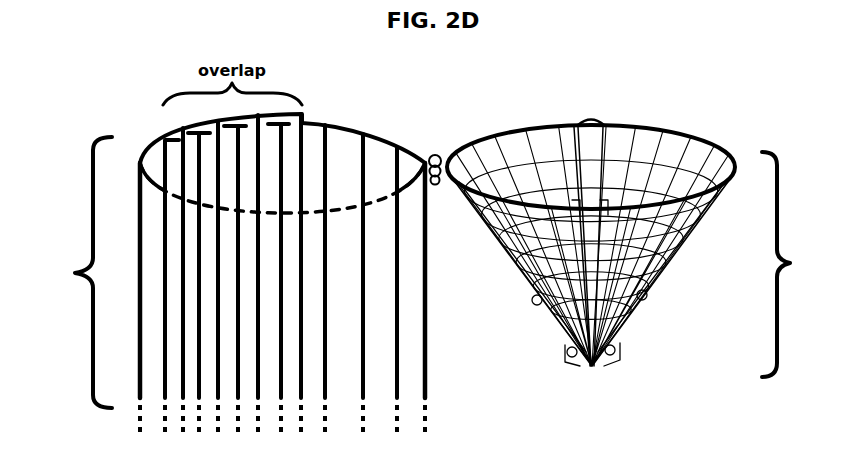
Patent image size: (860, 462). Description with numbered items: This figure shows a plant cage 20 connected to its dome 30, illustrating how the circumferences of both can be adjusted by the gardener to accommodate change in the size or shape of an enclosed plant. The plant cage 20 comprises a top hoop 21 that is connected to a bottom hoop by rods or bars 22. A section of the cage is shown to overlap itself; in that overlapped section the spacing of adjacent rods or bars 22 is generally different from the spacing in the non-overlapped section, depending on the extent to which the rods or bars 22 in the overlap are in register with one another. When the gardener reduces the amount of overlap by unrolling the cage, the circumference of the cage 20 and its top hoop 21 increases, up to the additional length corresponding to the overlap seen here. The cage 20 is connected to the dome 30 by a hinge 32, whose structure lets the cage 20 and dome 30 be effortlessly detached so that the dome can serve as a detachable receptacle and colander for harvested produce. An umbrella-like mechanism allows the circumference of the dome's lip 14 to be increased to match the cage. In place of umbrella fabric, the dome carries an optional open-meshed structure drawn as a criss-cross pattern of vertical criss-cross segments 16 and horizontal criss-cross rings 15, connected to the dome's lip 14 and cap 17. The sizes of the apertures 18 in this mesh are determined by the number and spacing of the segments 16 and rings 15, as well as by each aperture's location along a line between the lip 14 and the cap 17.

The dome's lip 14 is at (523, 130).
The horizontal criss-cross rings 15 is at (668, 165).
The vertical criss-cross segments 16 is at (708, 158).
The cap 17 is at (592, 372).
The apertures 18 is at (592, 245).
The plant cage 20 is at (72, 273).
The top hoop 21 is at (378, 138).
The rods or bars 22 is at (430, 357).
The dome 30 is at (795, 263).
The hinge 32 is at (435, 153).